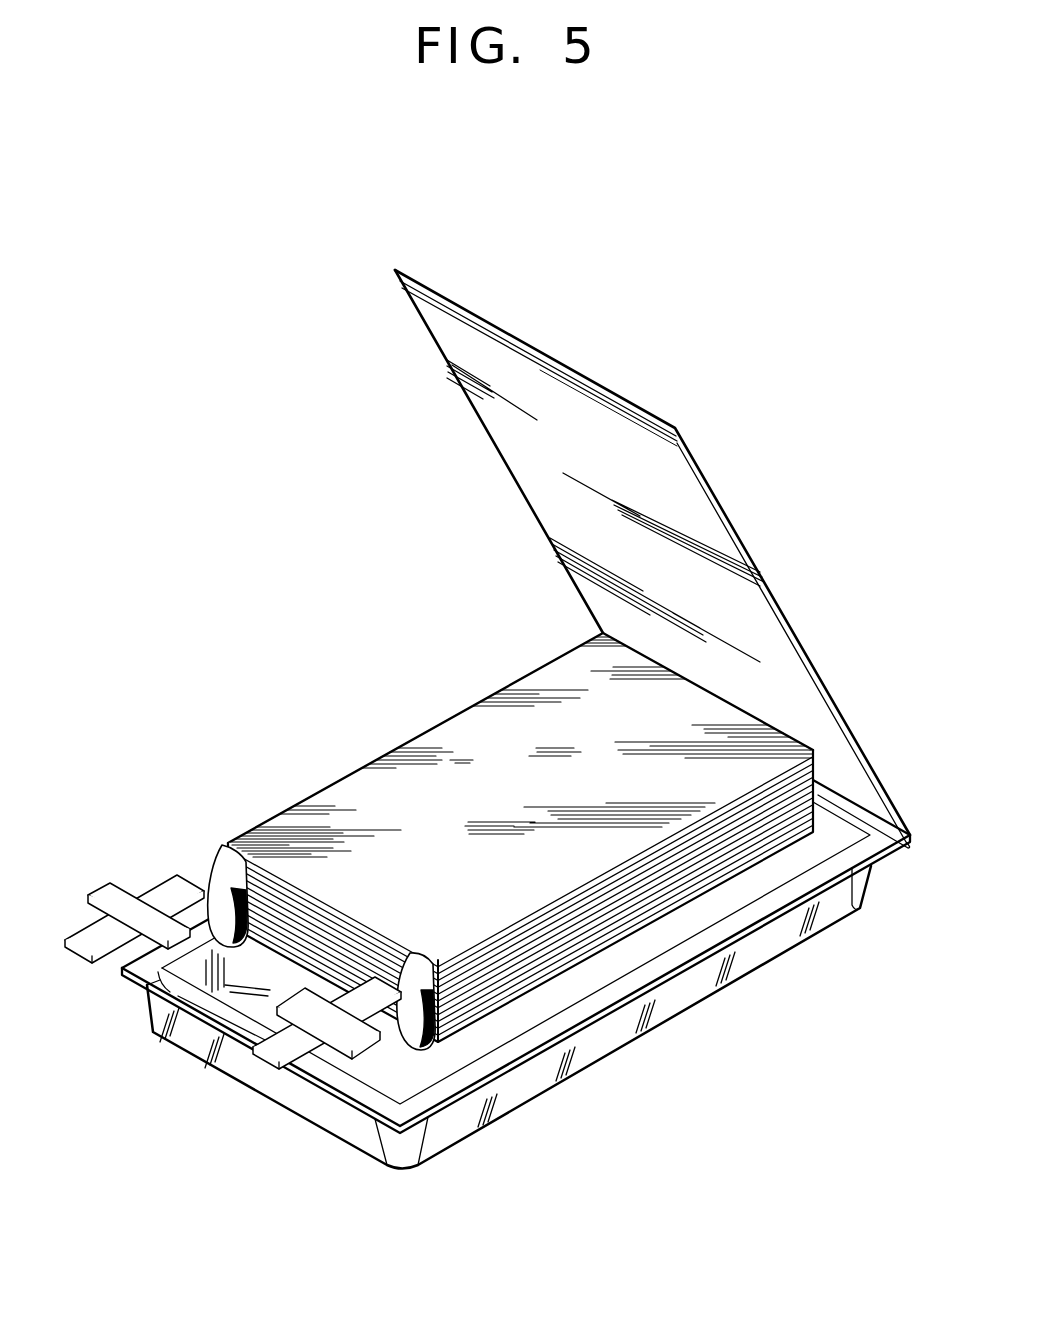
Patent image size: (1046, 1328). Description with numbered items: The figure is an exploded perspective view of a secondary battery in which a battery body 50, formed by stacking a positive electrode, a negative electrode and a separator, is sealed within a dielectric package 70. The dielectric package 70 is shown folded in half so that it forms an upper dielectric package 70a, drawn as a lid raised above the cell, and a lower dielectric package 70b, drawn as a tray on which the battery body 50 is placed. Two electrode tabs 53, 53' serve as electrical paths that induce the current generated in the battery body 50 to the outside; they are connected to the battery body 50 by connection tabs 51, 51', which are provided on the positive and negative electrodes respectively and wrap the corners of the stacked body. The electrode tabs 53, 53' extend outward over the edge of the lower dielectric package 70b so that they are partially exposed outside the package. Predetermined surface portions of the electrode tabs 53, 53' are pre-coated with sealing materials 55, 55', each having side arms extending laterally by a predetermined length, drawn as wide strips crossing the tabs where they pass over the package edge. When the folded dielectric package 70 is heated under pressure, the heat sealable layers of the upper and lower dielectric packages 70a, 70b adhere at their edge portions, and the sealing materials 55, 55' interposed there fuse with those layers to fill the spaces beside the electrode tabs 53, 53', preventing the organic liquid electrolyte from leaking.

The dielectric package 70 is at (628, 1043).
The upper dielectric package 70a is at (547, 353).
The lower dielectric package 70b is at (155, 1037).
The battery body 50 is at (386, 751).
The connection tab 51 is at (230, 849).
The connection tab 51' is at (427, 956).
The electrode tab 53 is at (127, 900).
The electrode tab 53' is at (277, 1063).
The sealing material having side arms 55 is at (136, 867).
The sealing material having side arms 55' is at (310, 1077).